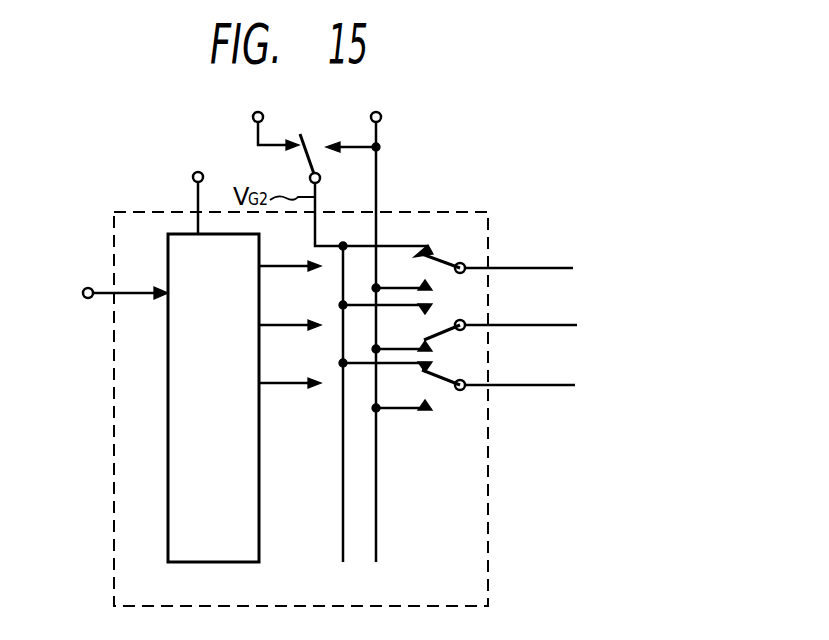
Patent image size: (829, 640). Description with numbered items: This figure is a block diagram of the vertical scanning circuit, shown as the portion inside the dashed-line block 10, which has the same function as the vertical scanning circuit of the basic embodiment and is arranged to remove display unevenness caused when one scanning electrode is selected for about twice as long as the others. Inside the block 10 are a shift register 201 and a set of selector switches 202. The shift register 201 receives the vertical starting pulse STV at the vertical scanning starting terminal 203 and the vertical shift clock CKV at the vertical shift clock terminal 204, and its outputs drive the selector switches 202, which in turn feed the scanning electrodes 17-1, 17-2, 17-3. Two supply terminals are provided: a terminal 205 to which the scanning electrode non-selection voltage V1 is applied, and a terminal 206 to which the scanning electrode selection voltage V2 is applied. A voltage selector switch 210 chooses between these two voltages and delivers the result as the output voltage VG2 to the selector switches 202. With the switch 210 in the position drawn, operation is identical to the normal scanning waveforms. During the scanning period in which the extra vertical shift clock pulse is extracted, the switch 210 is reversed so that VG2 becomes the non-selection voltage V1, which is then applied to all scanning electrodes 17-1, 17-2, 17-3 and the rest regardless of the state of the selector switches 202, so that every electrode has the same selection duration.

The vertical scanning circuit 10 is at (113, 583).
The shift register 201 is at (259, 553).
The selector switches 202 is at (444, 257).
The vertical scanning starting terminal 203 is at (193, 174).
The vertical shift clock terminal 204 is at (86, 288).
The terminal 205 is at (382, 117).
The terminal 206 is at (253, 117).
The voltage selector switch 210 is at (308, 164).
The scanning electrode 17-1 is at (565, 268).
The scanning electrode 17-2 is at (568, 326).
The scanning electrode 17-3 is at (567, 386).